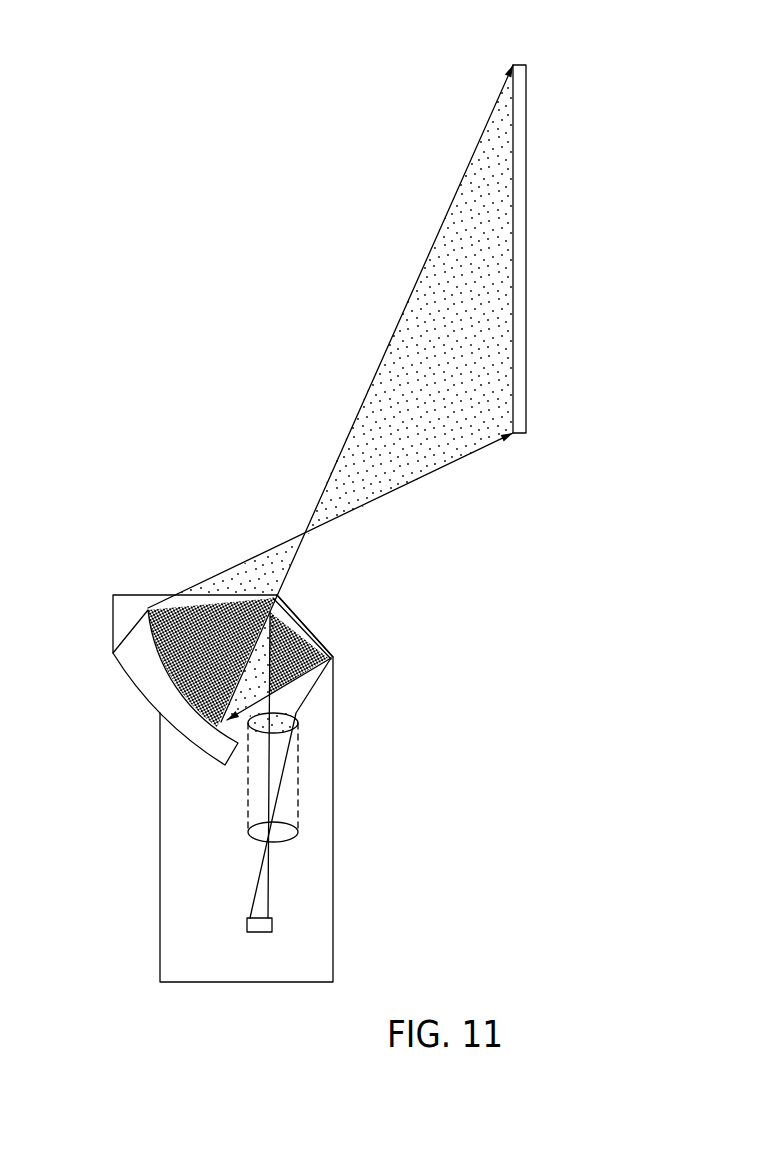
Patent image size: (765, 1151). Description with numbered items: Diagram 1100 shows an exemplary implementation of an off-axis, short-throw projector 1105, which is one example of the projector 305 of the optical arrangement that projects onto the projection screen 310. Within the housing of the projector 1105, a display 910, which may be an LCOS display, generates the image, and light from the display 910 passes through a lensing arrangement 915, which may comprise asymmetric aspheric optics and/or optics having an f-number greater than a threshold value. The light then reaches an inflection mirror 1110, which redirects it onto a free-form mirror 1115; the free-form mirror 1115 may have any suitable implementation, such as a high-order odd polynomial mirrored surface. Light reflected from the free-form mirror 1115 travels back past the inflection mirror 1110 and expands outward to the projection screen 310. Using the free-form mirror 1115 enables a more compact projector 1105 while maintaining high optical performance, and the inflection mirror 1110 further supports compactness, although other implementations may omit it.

The diagram 1100 is at (371, 524).
The projection screen 310 is at (520, 252).
The inflection mirror 1110 is at (302, 622).
The free-form mirror 1115 is at (153, 673).
The lensing arrangement 915 is at (247, 788).
The display 910 is at (259, 932).
The projector 1105 is at (294, 788).
The off-axis, short-throw projector 305 is at (342, 948).